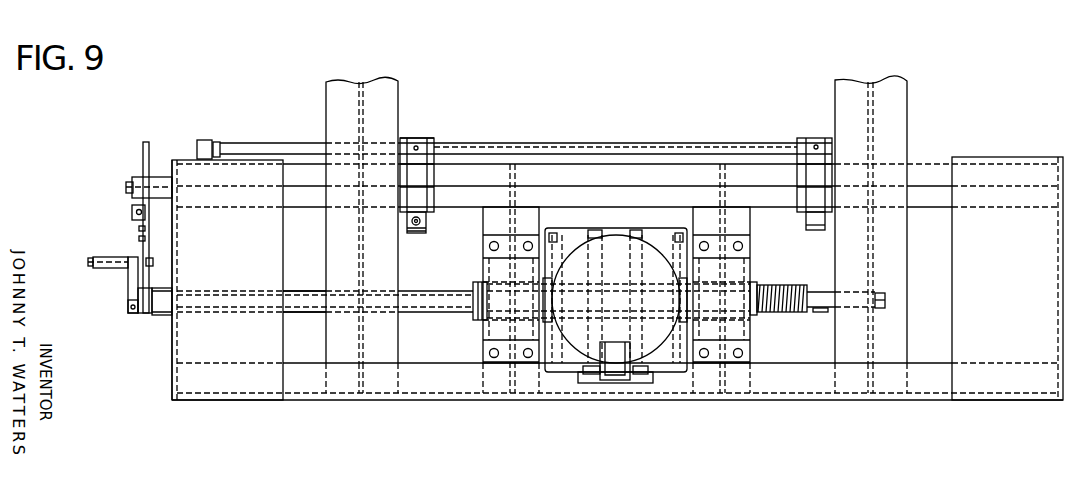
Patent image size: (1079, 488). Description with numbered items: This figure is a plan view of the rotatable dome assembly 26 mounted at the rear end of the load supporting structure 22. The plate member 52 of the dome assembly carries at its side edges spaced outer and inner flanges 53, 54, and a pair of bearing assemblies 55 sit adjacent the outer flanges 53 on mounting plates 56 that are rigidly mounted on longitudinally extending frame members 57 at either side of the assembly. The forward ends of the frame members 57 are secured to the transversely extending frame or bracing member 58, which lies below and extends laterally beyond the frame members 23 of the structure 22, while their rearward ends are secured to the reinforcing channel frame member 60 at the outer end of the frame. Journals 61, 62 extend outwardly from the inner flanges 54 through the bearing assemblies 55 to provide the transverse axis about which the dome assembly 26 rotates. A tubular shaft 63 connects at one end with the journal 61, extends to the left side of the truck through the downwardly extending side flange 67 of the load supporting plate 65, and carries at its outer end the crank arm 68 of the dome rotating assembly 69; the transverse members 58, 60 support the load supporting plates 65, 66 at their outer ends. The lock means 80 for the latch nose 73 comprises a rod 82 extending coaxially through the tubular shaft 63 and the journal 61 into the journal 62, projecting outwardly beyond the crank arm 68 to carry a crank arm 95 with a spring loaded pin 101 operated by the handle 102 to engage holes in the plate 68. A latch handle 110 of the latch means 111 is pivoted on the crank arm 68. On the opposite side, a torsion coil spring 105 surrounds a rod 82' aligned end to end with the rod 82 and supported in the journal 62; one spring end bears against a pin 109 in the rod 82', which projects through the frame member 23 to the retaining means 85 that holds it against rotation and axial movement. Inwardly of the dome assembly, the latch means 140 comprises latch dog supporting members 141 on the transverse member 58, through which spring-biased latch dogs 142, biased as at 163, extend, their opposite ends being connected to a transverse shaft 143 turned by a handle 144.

The load supporting structure 22 is at (400, 79).
The frame members 23 is at (377, 83).
The rotatable dome assembly 26 is at (645, 218).
The plate member 52 is at (572, 233).
The outer flanges 53 is at (557, 217).
The inner flanges 54 is at (630, 200).
The bearing assemblies 55 is at (483, 267).
The mounting plates 56 is at (483, 242).
The frame members 57 is at (492, 218).
The transverse frame or bracing member 58 is at (465, 182).
The reinforcing channel frame member 60 is at (440, 390).
The journal 61 is at (482, 325).
The journal 62 is at (752, 318).
The tubular shaft 63 is at (302, 292).
The load supporting plate 65 is at (252, 167).
The load supporting plate 66 is at (998, 162).
The side flange 67 is at (172, 165).
The crank arm 68 is at (148, 282).
The dome rotating assembly 69 is at (125, 205).
The latch nose 73 is at (618, 373).
The lock means 80 is at (126, 312).
The rod 82 is at (451, 316).
The rod 82' is at (841, 283).
The retaining means 85 is at (873, 310).
The crank arm 95 is at (128, 280).
The spring loaded pin 101 is at (152, 262).
The handle 102 is at (90, 258).
The torsion coil spring 105 is at (790, 285).
The pin 109 is at (815, 313).
The latch handle 110 is at (143, 147).
The latch means 111 is at (118, 168).
The latch means 140 is at (438, 135).
The latch dog supporting members 141 is at (433, 177).
The latch dog 142 is at (407, 233).
The shaft 143 is at (583, 148).
The handle 144 is at (217, 140).
The spring bias 163 is at (408, 222).